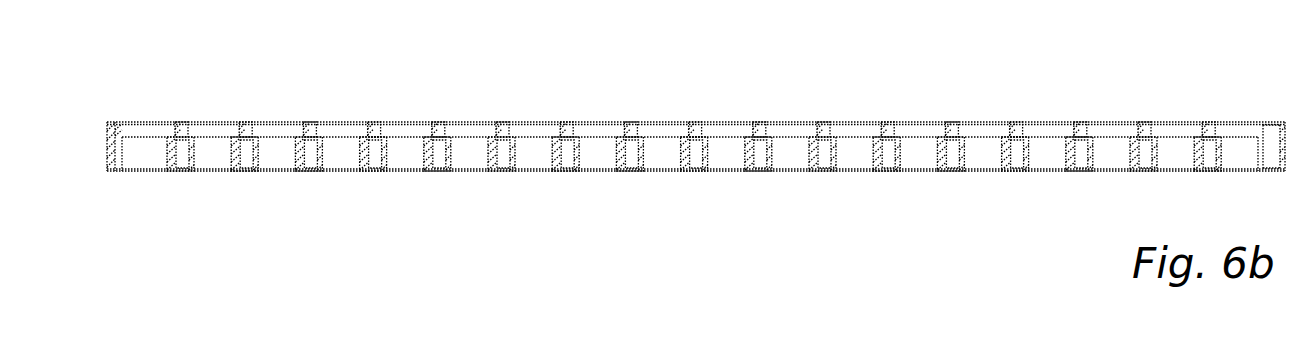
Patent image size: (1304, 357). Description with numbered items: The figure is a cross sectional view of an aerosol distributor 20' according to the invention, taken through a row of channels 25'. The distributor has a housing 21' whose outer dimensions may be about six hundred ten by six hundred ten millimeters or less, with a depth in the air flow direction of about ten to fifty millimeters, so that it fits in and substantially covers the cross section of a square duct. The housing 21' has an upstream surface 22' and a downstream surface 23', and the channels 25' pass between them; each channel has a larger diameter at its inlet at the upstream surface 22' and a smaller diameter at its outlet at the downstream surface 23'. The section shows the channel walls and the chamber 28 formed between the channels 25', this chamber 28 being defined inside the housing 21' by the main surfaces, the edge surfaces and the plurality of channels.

The aerosol distributor 20' is at (684, 135).
The housing 21' is at (103, 179).
The upstream surface 22' is at (696, 110).
The downstream surface 23' is at (696, 205).
The channels 25' is at (690, 184).
The chamber 28 is at (375, 160).